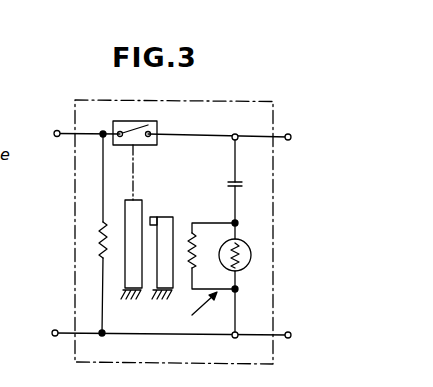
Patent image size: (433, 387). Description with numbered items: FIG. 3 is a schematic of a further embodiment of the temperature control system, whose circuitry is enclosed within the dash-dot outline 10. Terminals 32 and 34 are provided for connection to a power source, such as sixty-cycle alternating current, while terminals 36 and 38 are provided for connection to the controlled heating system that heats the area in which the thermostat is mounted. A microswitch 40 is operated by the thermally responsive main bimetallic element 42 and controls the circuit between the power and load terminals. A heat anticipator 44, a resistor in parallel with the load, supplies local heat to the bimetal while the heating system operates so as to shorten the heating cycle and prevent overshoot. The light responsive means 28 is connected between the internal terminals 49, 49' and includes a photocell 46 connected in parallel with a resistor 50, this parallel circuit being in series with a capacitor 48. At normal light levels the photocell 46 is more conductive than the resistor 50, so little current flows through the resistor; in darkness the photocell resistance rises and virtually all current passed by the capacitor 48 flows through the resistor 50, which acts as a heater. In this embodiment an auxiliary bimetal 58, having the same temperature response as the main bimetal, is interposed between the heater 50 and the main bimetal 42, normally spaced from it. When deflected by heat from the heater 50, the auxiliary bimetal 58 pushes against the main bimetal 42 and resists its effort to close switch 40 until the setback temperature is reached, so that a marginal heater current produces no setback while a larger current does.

The control circuit enclosure 10 is at (237, 100).
The light responsive means 28 is at (193, 311).
The terminal 32 is at (288, 134).
The terminal 34 is at (288, 338).
The terminal 36 is at (56, 130).
The terminal 38 is at (53, 336).
The microswitch 40 is at (157, 143).
The bimetallic element 42 is at (137, 213).
The heat anticipator 44 is at (99, 243).
The photocell 46 is at (245, 243).
The capacitor 48 is at (228, 184).
The internal terminal 49 is at (246, 123).
The internal terminal 49' is at (217, 346).
The resistor 50 is at (197, 250).
The auxiliary bimetal 58 is at (168, 217).